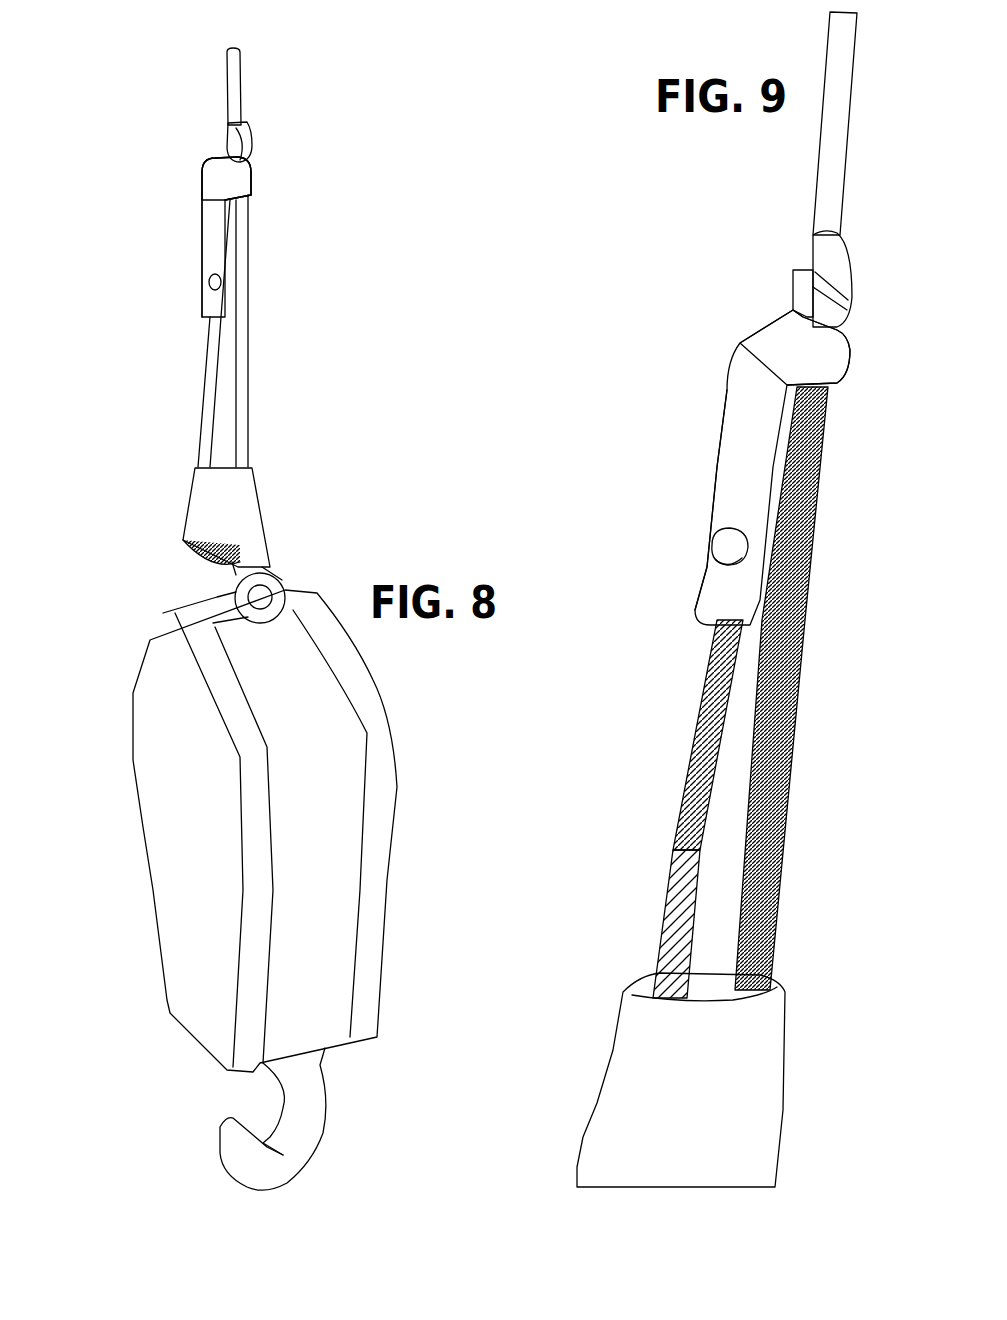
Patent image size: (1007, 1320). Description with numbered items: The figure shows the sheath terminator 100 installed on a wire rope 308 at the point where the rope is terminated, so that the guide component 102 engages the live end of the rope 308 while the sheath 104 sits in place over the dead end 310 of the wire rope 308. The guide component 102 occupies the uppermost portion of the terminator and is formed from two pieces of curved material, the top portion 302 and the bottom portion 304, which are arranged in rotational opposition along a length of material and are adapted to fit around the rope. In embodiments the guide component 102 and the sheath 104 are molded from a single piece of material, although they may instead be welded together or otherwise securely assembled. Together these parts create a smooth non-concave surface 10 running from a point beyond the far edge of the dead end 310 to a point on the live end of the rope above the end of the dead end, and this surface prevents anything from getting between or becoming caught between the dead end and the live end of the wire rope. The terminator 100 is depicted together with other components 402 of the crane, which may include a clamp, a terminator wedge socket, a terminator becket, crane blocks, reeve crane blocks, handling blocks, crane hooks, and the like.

In FIG. 8, the smooth non-concave surface 10 is at (203, 233).
In FIG. 9, the smooth non-concave surface 10 is at (716, 473).
In FIG. 8, the sheath terminator 100 is at (213, 222).
In FIG. 9, the sheath terminator 100 is at (740, 443).
In FIG. 8, the guide component 102 is at (209, 172).
In FIG. 9, the guide component 102 is at (815, 237).
In FIG. 8, the sheath 104 is at (291, 301).
In FIG. 9, the sheath 104 is at (730, 495).
In FIG. 8, the top portion 302 is at (562, 116).
In FIG. 9, the top portion 302 is at (830, 268).
In FIG. 8, the bottom portion 304 is at (646, 206).
In FIG. 9, the bottom portion 304 is at (800, 350).
In FIG. 8, the wire rope 308 is at (240, 378).
In FIG. 9, the wire rope 308 is at (783, 660).
In FIG. 8, the dead end 310 is at (215, 408).
In FIG. 9, the dead end 310 is at (707, 777).
In FIG. 8, the other components of the crane 402 is at (202, 502).
In FIG. 9, the other components of the crane 402 is at (635, 1058).